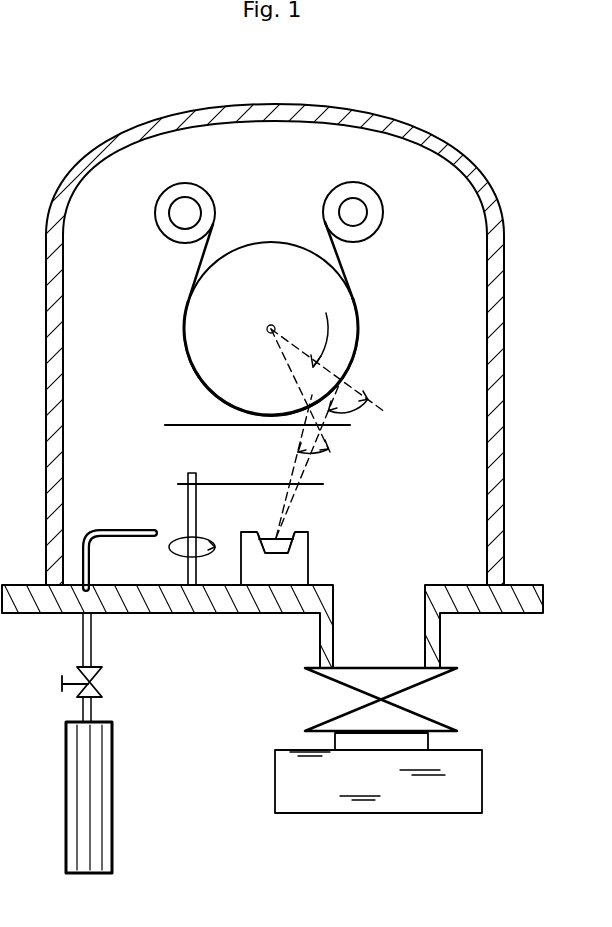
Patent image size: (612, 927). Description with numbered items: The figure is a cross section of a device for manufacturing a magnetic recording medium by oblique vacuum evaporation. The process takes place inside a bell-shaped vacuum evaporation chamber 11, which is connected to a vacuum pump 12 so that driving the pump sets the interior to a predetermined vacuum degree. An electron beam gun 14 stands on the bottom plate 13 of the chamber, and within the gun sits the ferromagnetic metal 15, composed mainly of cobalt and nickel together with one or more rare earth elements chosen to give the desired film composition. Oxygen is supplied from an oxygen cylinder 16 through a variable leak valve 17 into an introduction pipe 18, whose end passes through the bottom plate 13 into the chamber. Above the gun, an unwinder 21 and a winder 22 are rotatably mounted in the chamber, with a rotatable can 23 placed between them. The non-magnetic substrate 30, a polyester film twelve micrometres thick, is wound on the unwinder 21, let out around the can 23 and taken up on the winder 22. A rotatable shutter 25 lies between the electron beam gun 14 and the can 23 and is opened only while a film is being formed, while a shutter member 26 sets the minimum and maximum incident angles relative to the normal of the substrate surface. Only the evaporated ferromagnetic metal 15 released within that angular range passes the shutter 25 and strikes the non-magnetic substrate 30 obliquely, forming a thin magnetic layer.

The vacuum evaporation chamber 11 is at (503, 222).
The vacuum pump 12 is at (475, 778).
The bottom plate 13 is at (235, 615).
The electron beam gun 14 is at (297, 558).
The ferromagnetic metal 15 is at (273, 537).
The oxygen cylinder 16 is at (102, 773).
The variable leak valve 17 is at (102, 683).
The introduction pipe 18 is at (137, 528).
The unwinder 21 is at (375, 212).
The winder 22 is at (196, 194).
The can 23 is at (340, 303).
The shutter 25 is at (183, 485).
The shutter member 26 is at (177, 424).
The non-magnetic substrate 30 is at (357, 350).